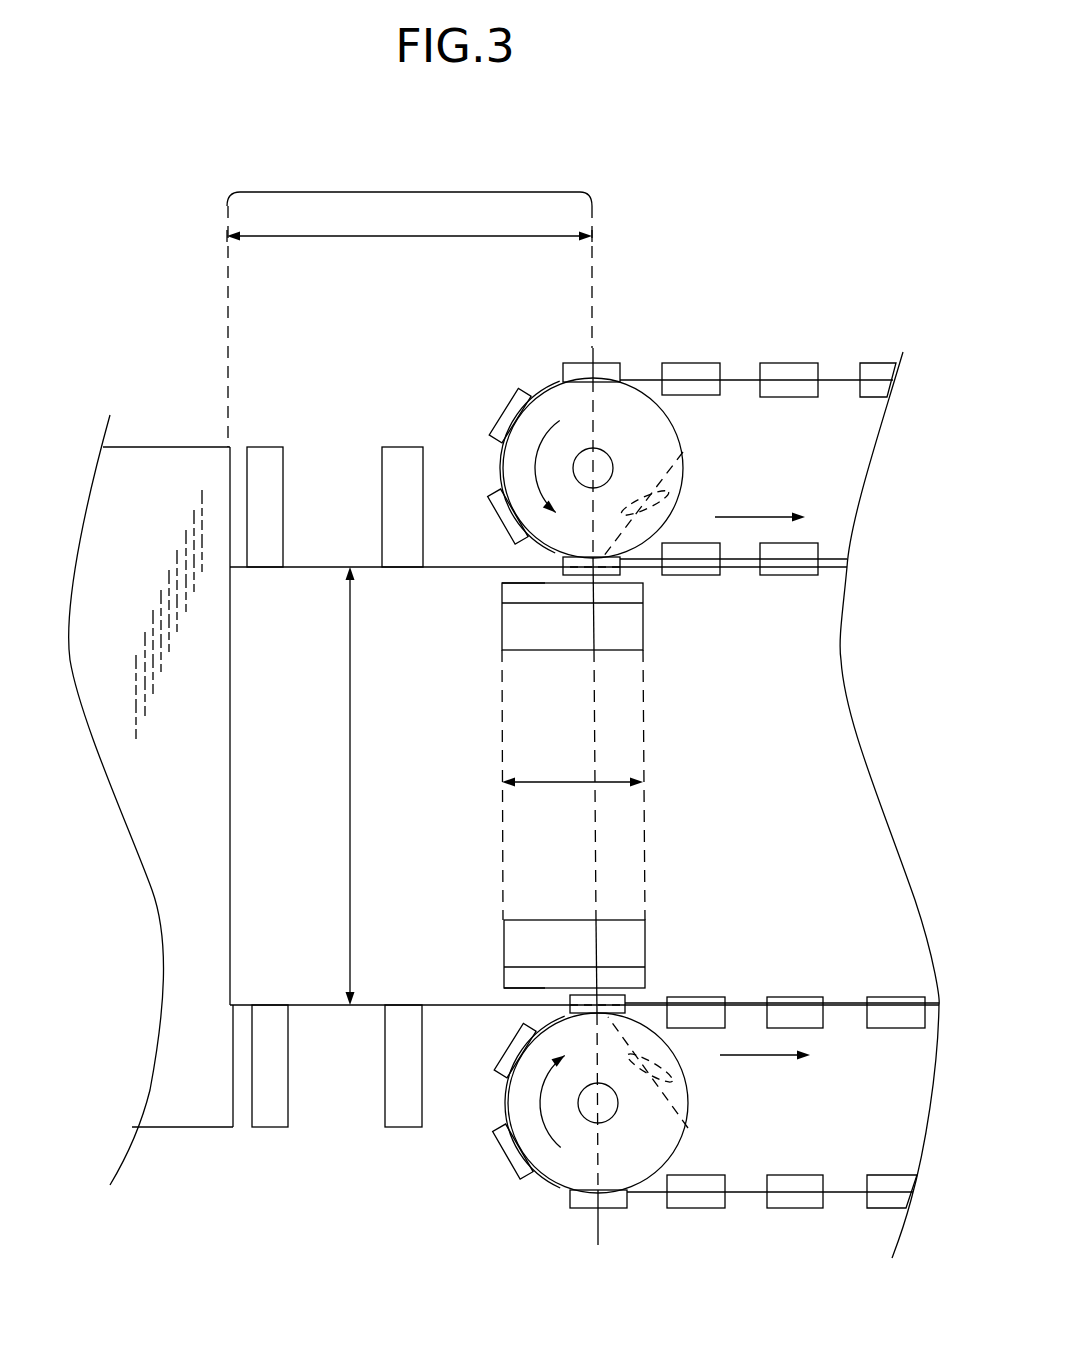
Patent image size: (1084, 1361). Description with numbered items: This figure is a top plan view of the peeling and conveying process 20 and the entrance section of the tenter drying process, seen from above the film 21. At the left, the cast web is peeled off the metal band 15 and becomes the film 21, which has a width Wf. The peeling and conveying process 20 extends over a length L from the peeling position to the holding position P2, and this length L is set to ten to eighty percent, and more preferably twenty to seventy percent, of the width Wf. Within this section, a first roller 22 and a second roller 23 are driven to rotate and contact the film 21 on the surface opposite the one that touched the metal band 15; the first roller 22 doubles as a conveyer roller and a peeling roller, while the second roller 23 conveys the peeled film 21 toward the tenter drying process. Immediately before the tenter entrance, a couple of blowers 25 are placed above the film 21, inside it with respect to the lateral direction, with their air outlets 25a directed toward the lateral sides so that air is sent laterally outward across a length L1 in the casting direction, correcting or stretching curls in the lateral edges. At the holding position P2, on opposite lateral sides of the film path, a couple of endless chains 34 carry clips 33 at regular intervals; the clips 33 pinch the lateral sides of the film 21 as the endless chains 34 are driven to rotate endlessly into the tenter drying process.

The metal band 15 is at (140, 455).
The peeling and conveying process 20 is at (405, 192).
The film 21 is at (298, 575).
The first roller 22 is at (265, 455).
The second roller 23 is at (403, 455).
The blowers 25 is at (507, 622).
The air outlets 25a is at (512, 592).
The clips 33 is at (562, 364).
The endless chains 34 is at (739, 378).
The holding position P2 is at (683, 452).
The length of the peeling and conveying process L is at (409, 221).
The length blown by the blowers L1 is at (572, 765).
The width of the cast web Wf is at (372, 786).